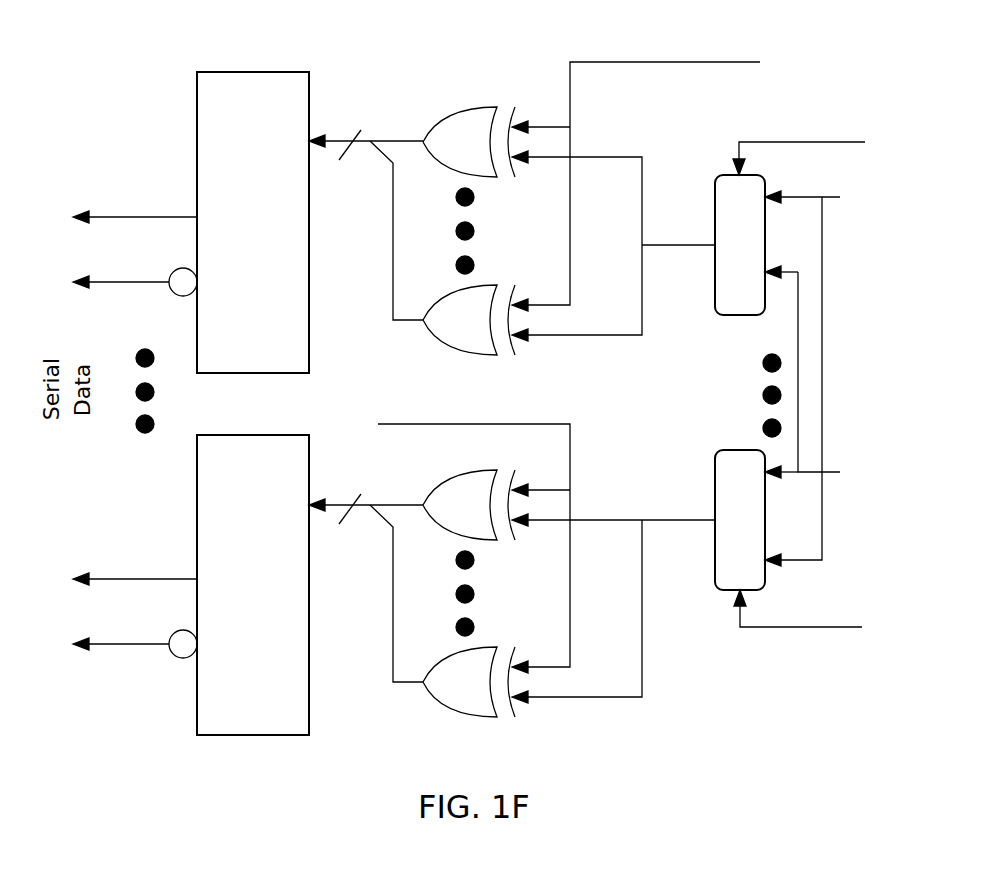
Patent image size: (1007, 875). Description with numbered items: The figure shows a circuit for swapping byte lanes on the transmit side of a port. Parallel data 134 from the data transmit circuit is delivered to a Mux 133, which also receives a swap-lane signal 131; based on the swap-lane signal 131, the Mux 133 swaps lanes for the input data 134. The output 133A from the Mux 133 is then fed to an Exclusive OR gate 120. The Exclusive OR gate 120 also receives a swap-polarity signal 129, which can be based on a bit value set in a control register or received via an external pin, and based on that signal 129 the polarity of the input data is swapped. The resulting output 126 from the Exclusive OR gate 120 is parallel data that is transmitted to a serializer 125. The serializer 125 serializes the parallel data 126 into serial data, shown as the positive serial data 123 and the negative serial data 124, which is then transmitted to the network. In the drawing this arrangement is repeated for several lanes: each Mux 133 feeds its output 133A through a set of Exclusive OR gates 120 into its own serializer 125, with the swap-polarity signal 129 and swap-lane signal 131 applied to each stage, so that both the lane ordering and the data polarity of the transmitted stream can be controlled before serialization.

The Exclusive OR gate 120 is at (460, 107).
The serial data (positive) 123 is at (122, 181).
The serial data (negative) 124 is at (148, 283).
The serializer 125 is at (243, 72).
The parallel data 126 is at (354, 110).
The swap-polarity signal 129 is at (598, 62).
The swap-lane signal 131 is at (800, 118).
The Mux 133 is at (735, 315).
The output 133A is at (642, 243).
The parallel data 134 is at (822, 300).